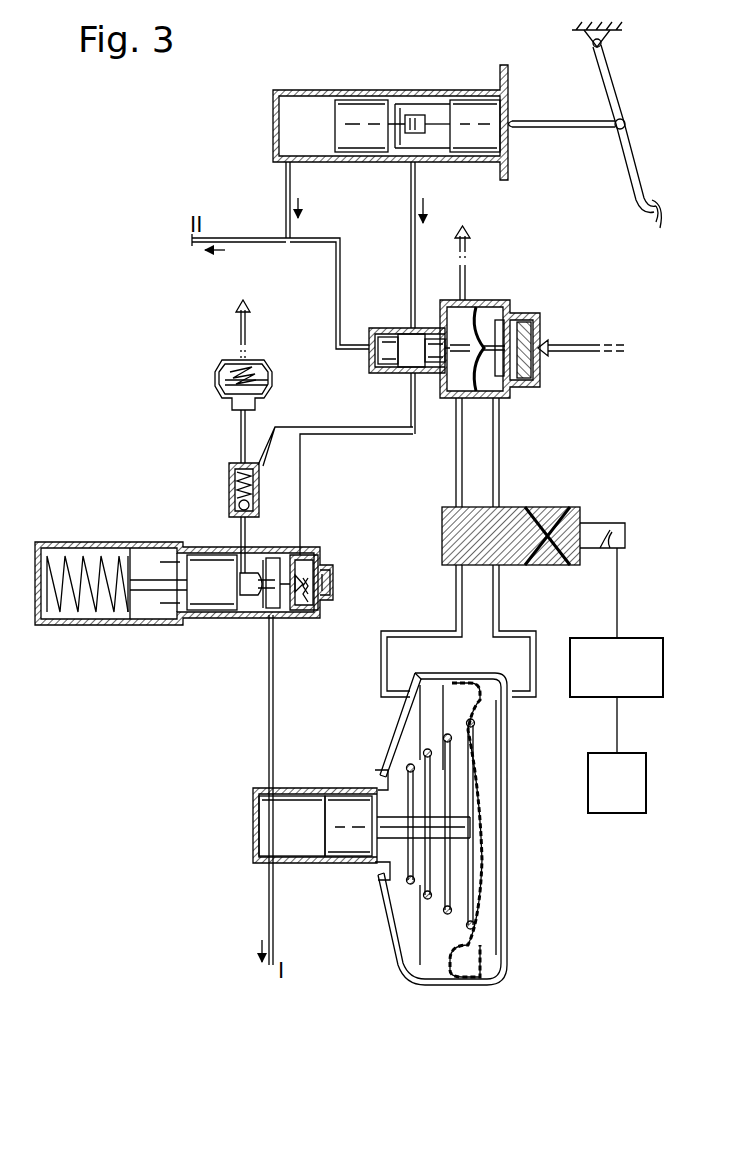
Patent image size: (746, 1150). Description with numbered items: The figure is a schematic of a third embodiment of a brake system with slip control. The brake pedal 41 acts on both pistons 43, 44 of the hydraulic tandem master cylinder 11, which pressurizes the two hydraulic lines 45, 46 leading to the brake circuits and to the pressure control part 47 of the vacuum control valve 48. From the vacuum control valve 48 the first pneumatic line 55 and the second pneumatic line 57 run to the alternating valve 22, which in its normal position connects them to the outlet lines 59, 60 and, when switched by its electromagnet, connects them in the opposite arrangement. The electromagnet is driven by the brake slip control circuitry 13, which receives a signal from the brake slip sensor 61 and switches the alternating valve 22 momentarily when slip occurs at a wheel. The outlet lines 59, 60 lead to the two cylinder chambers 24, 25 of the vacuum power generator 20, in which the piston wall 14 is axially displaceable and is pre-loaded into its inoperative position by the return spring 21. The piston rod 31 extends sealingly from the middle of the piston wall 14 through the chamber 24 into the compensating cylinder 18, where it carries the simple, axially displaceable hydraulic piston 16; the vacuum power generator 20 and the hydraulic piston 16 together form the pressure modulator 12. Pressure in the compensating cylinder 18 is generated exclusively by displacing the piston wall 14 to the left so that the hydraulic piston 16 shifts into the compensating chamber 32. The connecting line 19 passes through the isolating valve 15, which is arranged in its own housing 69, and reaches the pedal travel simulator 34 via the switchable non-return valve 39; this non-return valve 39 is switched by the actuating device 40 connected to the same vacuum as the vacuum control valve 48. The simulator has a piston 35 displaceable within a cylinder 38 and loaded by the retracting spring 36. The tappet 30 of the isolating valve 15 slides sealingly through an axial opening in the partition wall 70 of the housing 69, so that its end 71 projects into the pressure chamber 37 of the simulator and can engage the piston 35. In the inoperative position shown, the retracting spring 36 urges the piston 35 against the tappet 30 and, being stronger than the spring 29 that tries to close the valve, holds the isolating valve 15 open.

The hydraulic tandem master cylinder 11 is at (303, 90).
The pressure modulator 12 is at (340, 866).
The brake slip control circuitry 13 is at (640, 648).
The piston wall 14 is at (480, 895).
The isolating valve 15 is at (304, 606).
The hydraulic piston 16 is at (346, 800).
The compensating cylinder 18 is at (290, 790).
The connecting line 19 is at (344, 427).
The vacuum power generator 20 is at (428, 985).
The return spring 21 is at (422, 885).
The alternating valve 22 is at (575, 507).
The cylinder chamber 24 is at (402, 735).
The cylinder chamber 25 is at (492, 787).
The spring 29 is at (332, 600).
The tappet 30 is at (276, 610).
The piston rod 31 is at (460, 826).
The compensating chamber 32 is at (272, 830).
The pedal travel simulator 34 is at (88, 540).
The piston 35 is at (202, 560).
The retracting spring 36 is at (96, 615).
The pressure chamber 37 is at (262, 562).
The cylinder 38 is at (210, 620).
The switchable non-return valve 39 is at (229, 480).
The actuating device 40 is at (216, 364).
The brake pedal 41 is at (636, 194).
The piston 43 is at (470, 145).
The piston 44 is at (363, 150).
The hydraulic line 45 is at (415, 186).
The hydraulic line 46 is at (290, 186).
The pressure control part 47 is at (394, 328).
The vacuum control valve 48 is at (522, 304).
The first pneumatic line 55 is at (499, 458).
The second pneumatic line 57 is at (456, 455).
The outlet line 59 is at (499, 600).
The outlet line 60 is at (456, 596).
The brake slip sensor 61 is at (634, 756).
The housing 69 is at (312, 556).
The partition wall 70 is at (252, 606).
The end of tappet 71 is at (250, 578).